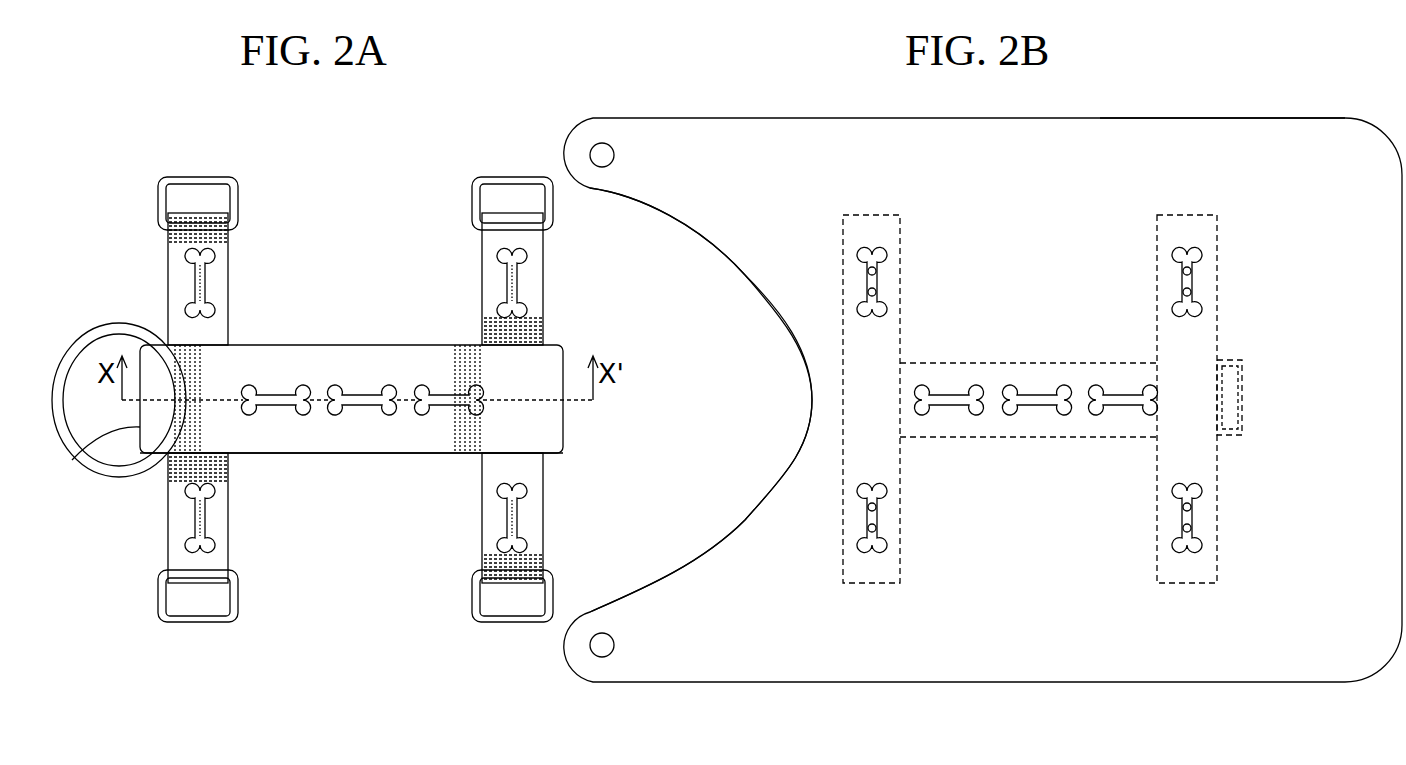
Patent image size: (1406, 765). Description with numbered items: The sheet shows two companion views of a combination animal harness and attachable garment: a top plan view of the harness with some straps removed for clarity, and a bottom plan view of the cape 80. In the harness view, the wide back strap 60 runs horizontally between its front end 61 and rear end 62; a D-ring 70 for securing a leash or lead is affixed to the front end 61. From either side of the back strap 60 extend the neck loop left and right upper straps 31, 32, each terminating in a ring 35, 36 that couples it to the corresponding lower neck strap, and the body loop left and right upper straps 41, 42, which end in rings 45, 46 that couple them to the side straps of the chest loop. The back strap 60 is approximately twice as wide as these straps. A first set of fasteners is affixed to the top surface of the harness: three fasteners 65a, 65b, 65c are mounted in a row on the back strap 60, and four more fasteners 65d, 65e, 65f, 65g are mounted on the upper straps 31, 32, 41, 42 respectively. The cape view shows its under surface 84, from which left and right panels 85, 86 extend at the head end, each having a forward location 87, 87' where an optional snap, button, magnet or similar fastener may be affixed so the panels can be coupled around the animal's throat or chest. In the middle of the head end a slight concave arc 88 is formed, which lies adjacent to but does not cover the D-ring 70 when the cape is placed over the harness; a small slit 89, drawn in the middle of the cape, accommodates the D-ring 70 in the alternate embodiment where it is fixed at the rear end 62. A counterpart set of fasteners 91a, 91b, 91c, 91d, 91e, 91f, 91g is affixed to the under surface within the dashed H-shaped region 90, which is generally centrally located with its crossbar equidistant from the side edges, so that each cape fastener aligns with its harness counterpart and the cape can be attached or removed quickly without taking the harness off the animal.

In FIG. 2A, the left upper strap of neck loop 31 is at (168, 548).
In FIG. 2A, the right upper strap of neck loop 32 is at (168, 250).
In FIG. 2A, the ring 35 is at (158, 598).
In FIG. 2A, the ring 36 is at (158, 207).
In FIG. 2A, the left upper strap of body loop 41 is at (482, 548).
In FIG. 2A, the right upper strap of body loop 42 is at (482, 250).
In FIG. 2A, the ring 45 is at (472, 598).
In FIG. 2A, the ring 46 is at (472, 207).
In FIG. 2A, the back strap 60 is at (563, 343).
In FIG. 2A, the front end of back strap 61 is at (86, 449).
In FIG. 2A, the rear end of back strap 62 is at (563, 437).
In FIG. 2A, the fastener 65a is at (276, 393).
In FIG. 2A, the fastener 65b is at (362, 393).
In FIG. 2A, the fastener 65c is at (449, 393).
In FIG. 2A, the fastener 65d is at (185, 283).
In FIG. 2A, the fastener 65e is at (185, 521).
In FIG. 2A, the fastener 65f is at (497, 283).
In FIG. 2A, the fastener 65g is at (497, 521).
In FIG. 2A, the D-ring 70 is at (108, 478).
In FIG. 2B, the cape 80 is at (1370, 125).
In FIG. 2B, the tail (distal) end / under surface of cape 84 is at (1297, 142).
In FIG. 2B, the left panel 85 is at (590, 612).
In FIG. 2B, the right panel 86 is at (592, 190).
In FIG. 2B, the forward location 87 is at (549, 676).
In FIG. 2B, the forward location 87' is at (549, 125).
In FIG. 2B, the concave arc 88 is at (812, 400).
In FIG. 2B, the slit 89 is at (1245, 393).
In FIG. 2B, the H-shaped region 90 is at (1187, 583).
In FIG. 2B, the fastener 91a is at (947, 393).
In FIG. 2B, the fastener 91b is at (1037, 393).
In FIG. 2B, the fastener 91c is at (1120, 393).
In FIG. 2B, the fastener 91d is at (880, 518).
In FIG. 2B, the fastener 91e is at (880, 283).
In FIG. 2B, the fastener 91f is at (1195, 518).
In FIG. 2B, the fastener 91g is at (1195, 283).